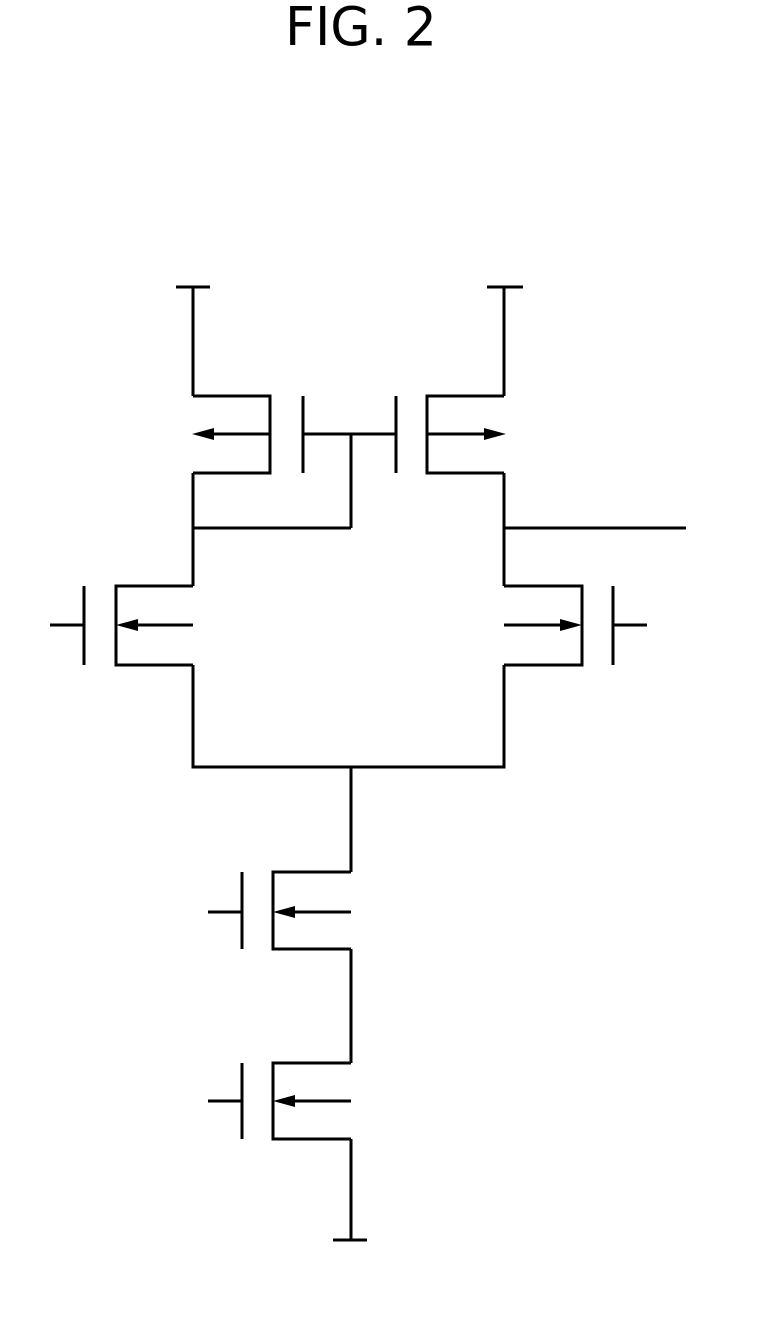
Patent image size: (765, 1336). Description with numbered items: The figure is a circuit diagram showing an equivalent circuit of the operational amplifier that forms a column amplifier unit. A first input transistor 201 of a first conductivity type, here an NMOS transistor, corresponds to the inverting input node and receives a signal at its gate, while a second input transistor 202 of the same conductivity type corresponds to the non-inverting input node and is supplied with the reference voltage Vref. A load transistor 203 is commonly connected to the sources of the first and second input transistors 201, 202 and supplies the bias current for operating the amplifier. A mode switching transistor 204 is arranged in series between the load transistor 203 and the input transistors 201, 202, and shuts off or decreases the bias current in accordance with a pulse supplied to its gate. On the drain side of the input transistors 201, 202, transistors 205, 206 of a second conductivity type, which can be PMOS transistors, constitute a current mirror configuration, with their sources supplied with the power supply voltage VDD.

The first input transistor 201 is at (557, 682).
The second input transistor 202 is at (146, 682).
The load transistor 203 is at (370, 1102).
The mode switching transistor 204 is at (370, 913).
The transistor 205 is at (185, 418).
The transistor 206 is at (518, 417).